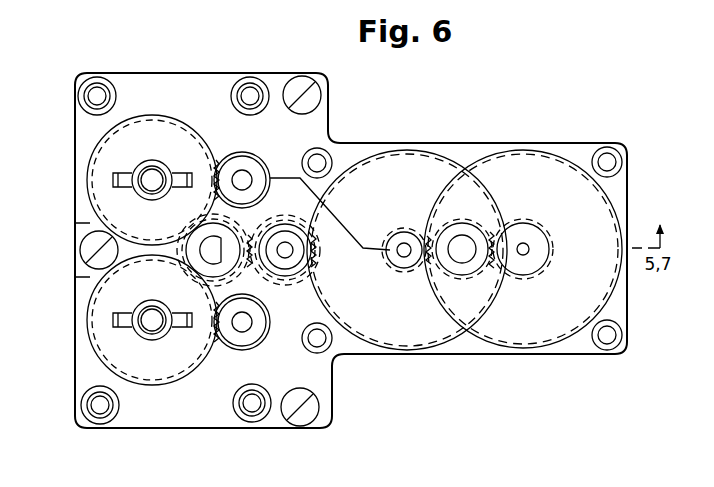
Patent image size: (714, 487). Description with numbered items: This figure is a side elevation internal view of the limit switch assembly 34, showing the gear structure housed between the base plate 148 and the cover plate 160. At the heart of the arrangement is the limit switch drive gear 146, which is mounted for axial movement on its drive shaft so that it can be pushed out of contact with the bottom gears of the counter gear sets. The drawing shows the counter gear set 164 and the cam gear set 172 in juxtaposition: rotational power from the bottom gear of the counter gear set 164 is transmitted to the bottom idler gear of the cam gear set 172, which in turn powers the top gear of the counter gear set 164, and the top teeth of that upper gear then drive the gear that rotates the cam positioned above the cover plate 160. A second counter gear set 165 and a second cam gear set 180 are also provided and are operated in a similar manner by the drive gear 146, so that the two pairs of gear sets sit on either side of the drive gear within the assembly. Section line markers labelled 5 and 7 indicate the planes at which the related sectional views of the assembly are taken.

The cover plate 160 is at (165, 73).
The counter gear set 164 is at (95, 150).
The second counter gear set 165 is at (93, 346).
The cam gear set 172 is at (267, 159).
The second cam gear set 180 is at (225, 354).
The drive gear 146 is at (186, 252).
The base plate 148 is at (485, 143).
The limit switch assembly 34 is at (337, 380).
The section line 7 is at (30, 150).
The section line 5 is at (40, 222).